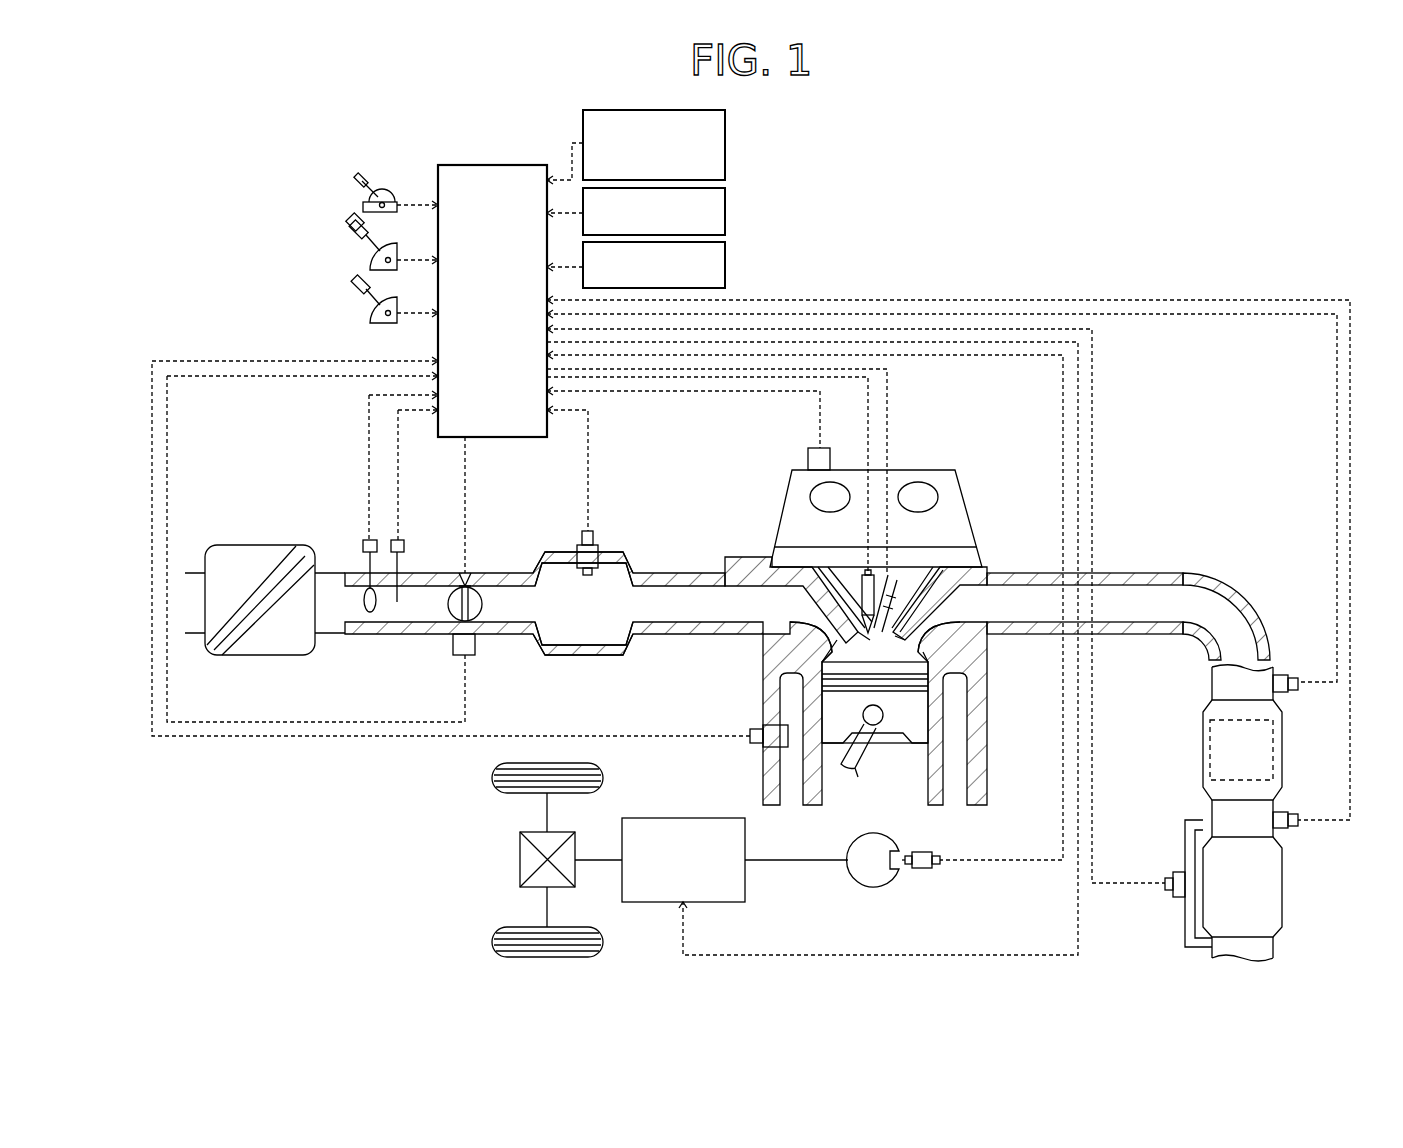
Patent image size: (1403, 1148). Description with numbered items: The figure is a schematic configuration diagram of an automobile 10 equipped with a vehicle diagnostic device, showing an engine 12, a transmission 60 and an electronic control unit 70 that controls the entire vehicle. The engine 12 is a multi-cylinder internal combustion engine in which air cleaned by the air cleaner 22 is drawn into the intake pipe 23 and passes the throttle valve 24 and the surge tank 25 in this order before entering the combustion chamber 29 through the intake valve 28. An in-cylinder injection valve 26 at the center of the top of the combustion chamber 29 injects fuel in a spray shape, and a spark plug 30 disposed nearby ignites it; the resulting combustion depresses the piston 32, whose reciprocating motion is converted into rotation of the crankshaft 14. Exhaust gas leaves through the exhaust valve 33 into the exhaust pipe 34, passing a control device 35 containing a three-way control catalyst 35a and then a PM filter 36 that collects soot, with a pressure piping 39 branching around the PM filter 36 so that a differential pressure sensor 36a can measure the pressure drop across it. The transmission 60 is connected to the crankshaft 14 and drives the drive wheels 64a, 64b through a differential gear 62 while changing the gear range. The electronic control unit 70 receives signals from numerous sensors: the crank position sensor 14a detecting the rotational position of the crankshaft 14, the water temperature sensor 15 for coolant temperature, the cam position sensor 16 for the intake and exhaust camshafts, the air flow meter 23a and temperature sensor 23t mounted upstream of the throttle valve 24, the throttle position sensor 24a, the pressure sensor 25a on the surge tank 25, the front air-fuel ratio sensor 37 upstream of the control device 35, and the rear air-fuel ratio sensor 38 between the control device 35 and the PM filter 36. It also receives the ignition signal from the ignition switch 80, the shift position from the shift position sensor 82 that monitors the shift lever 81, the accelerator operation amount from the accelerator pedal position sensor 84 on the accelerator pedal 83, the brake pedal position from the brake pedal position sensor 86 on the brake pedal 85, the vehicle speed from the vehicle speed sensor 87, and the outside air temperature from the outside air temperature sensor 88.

The automobile 10 is at (908, 188).
The engine 12 is at (988, 476).
The crankshaft 14 is at (872, 888).
The crank position sensor 14a is at (920, 870).
The water temperature sensor 15 is at (762, 733).
The cam position sensor 16 is at (808, 460).
The air cleaner 22 is at (268, 545).
The intake pipe 23 is at (385, 636).
The air flow meter 23a is at (362, 545).
The temperature sensor 23t is at (404, 545).
The throttle valve 24 is at (480, 598).
The throttle position sensor 24a is at (480, 650).
The surge tank 25 is at (582, 657).
The pressure sensor 25a is at (580, 545).
The in-cylinder injection valve 26 is at (820, 600).
The intake valve 28 is at (833, 640).
The combustion chamber 29 is at (908, 656).
The spark plug 30 is at (925, 603).
The piston 32 is at (901, 724).
The exhaust valve 33 is at (912, 640).
The exhaust pipe 34 is at (1015, 572).
The control device 35 is at (1205, 768).
The control catalyst 35a is at (1208, 740).
The PM filter 36 is at (1283, 888).
The differential pressure sensor 36a is at (1180, 872).
The front air-fuel ratio sensor 37 is at (1293, 675).
The rear air-fuel ratio sensor 38 is at (1290, 812).
The pressure piping 39 is at (1184, 838).
The transmission 60 is at (683, 818).
The differential gear 62 is at (520, 858).
The drive wheel 64a is at (492, 780).
The drive wheel 64b is at (492, 943).
The electronic control unit 70 is at (493, 165).
The ignition switch 80 is at (727, 213).
The shift lever 81 is at (358, 181).
The shift position sensor 82 is at (363, 207).
The accelerator pedal 83 is at (357, 235).
The accelerator pedal position sensor 84 is at (372, 264).
The brake pedal 85 is at (359, 289).
The brake pedal position sensor 86 is at (372, 317).
The vehicle speed sensor 87 is at (727, 266).
The outside air temperature sensor 88 is at (727, 155).